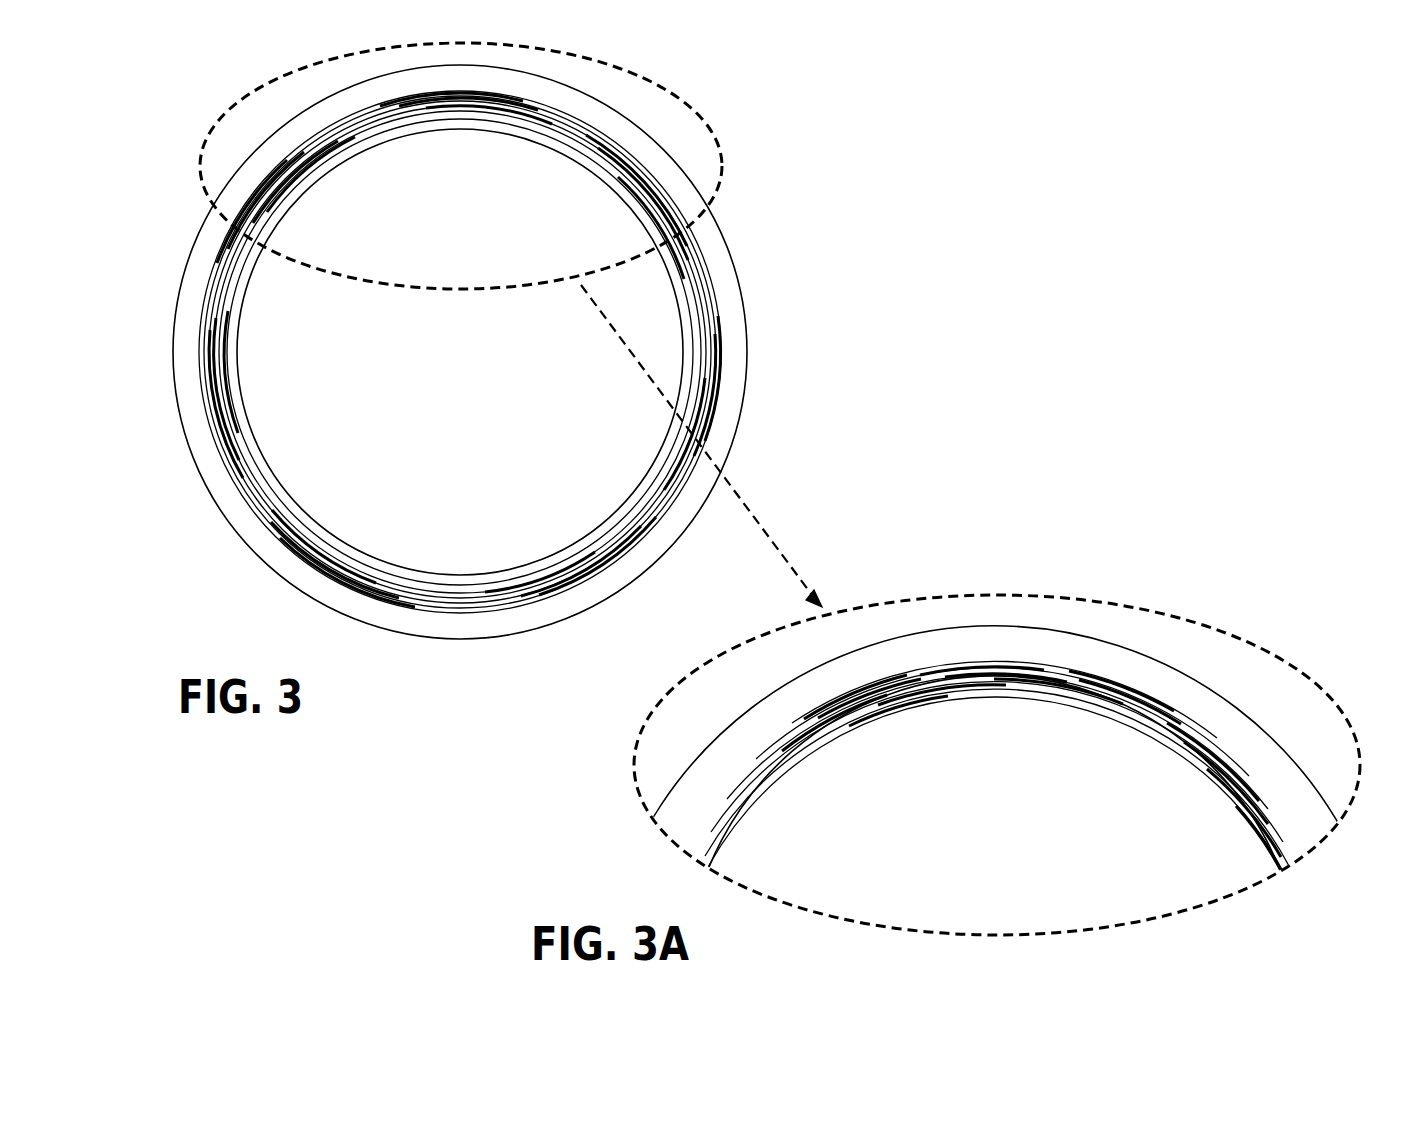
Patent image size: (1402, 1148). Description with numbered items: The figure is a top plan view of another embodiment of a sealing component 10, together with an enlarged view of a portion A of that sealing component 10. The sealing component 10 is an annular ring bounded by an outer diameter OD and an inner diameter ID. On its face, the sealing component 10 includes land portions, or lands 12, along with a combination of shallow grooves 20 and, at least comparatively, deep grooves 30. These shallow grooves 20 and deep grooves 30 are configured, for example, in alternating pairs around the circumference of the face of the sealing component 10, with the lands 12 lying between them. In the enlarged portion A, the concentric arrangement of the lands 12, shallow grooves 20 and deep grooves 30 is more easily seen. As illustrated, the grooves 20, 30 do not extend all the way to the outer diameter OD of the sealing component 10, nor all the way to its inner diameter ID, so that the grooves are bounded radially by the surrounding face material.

In FIG. 3, the sealing component 10 is at (762, 215).
In FIG. 3A, the land portions 12 is at (733, 745).
In FIG. 3A, the shallow grooves 20 is at (868, 687).
In FIG. 3A, the deep grooves 30 is at (692, 806).
In FIG. 3, the outer diameter OD is at (262, 147).
In FIG. 3A, the outer diameter OD is at (938, 626).
In FIG. 3, the inner diameter ID is at (366, 143).
In FIG. 3A, the inner diameter ID is at (913, 727).
In FIG. 3, the portion A is at (645, 80).